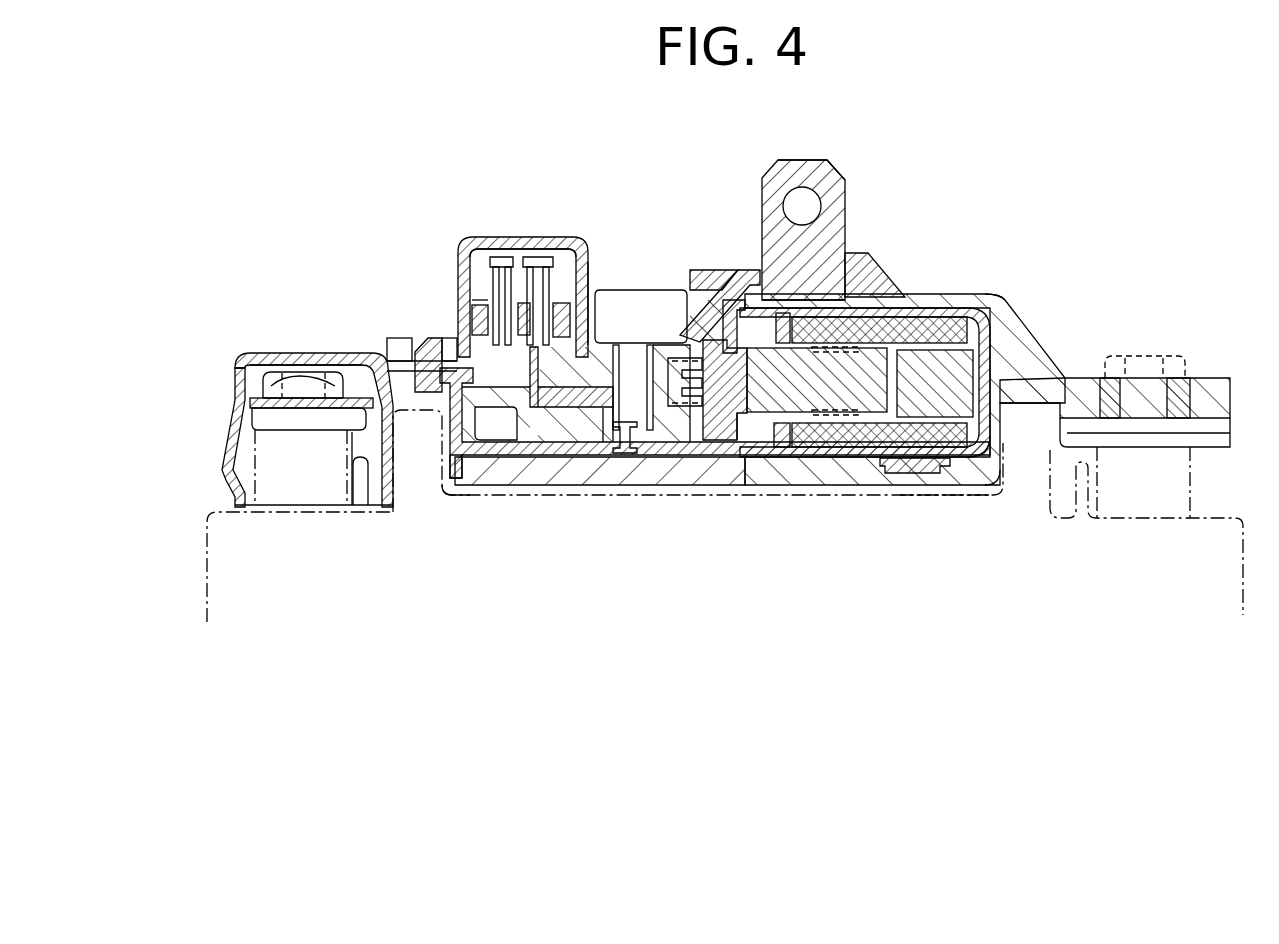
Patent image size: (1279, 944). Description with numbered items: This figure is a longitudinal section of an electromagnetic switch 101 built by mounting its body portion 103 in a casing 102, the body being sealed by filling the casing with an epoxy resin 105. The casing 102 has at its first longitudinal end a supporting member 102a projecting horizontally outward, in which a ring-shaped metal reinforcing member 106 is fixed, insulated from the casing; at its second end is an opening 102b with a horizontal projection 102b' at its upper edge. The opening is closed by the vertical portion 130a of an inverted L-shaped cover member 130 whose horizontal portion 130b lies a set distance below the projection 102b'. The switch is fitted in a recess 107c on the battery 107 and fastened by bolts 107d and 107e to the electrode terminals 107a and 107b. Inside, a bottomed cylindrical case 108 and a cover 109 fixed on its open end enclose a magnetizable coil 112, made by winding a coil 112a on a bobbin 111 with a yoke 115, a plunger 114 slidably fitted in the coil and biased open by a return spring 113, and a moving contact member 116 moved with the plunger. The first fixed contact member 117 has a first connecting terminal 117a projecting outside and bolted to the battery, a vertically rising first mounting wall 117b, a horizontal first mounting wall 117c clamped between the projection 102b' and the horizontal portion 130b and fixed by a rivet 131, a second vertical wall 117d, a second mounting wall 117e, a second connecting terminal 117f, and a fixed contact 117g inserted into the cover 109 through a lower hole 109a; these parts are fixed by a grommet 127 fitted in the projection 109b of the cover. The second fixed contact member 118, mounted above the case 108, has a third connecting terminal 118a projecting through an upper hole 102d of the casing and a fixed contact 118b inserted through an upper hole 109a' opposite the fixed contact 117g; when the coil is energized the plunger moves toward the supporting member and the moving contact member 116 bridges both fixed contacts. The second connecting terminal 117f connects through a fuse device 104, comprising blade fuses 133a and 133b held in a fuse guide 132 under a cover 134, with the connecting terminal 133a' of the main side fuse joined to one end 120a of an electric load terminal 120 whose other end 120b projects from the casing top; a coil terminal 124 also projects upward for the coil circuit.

The electromagnetic switch 101 is at (1003, 295).
The casing 102 is at (992, 307).
The supporting member 102a is at (1212, 387).
The opening 102b is at (421, 514).
The projection 102b' is at (392, 347).
The upper hole 102d is at (847, 250).
The body portion 103 is at (1005, 322).
The fuse device 104 is at (553, 233).
The epoxy resin 105 is at (690, 440).
The reinforcing member 106 is at (1168, 378).
The battery 107 is at (202, 563).
The electrode terminal 107a is at (277, 493).
The negative terminal 107b is at (1127, 520).
The recess 107c is at (938, 500).
The bolt 107d is at (270, 380).
The bolt 107e is at (1107, 357).
The bottomed cylindrical case 108 is at (963, 300).
The cover 109 is at (707, 283).
The lower hole 109a is at (702, 436).
The upper hole 109a' is at (721, 289).
The projection 109b is at (610, 480).
The bobbin 111 is at (967, 485).
The magnetizable coil 112 is at (990, 338).
The coil 112a is at (885, 473).
The return spring 113 is at (880, 450).
The plunger 114 is at (880, 345).
The yoke 115 is at (785, 455).
The moving contact member 116 is at (740, 440).
The first fixed contact member 117 is at (540, 408).
The first connecting terminal 117a is at (252, 402).
The vertically rising first mounting wall 117b is at (367, 423).
The first mounting wall 117c is at (350, 348).
The second vertical wall 117d is at (443, 423).
The second mounting wall 117e is at (603, 450).
The second connecting terminal 117f is at (545, 445).
The fixed contact 117g is at (730, 440).
The second fixed contact member 118 is at (760, 192).
The third connecting terminal 118a is at (832, 168).
The fixed contact 118b is at (660, 287).
The electric load terminal 120 is at (585, 320).
The one end of load terminal 120a is at (588, 262).
The other end of load terminal 120b is at (613, 303).
The coil terminal 124 is at (676, 406).
The grommet 127 is at (625, 455).
The cover member 130 is at (450, 478).
The vertical portion 130a is at (470, 458).
The horizontal portion 130b is at (410, 355).
The rivet 131 is at (445, 335).
The fuse guide 132 is at (480, 305).
The main side blade fuse 133a is at (553, 258).
The connecting terminal 133a' is at (411, 279).
The blade fuse 133b is at (497, 257).
The cover 134 is at (480, 237).